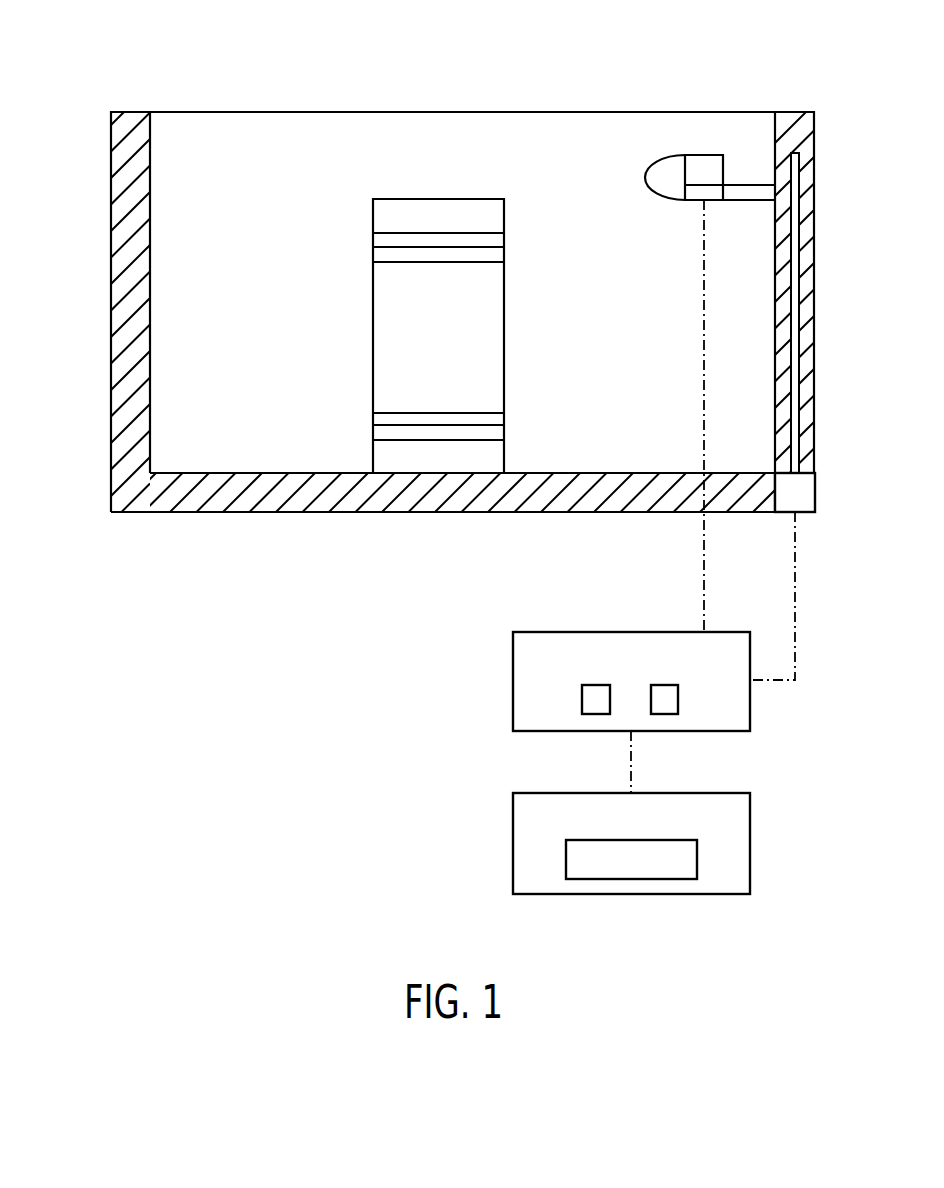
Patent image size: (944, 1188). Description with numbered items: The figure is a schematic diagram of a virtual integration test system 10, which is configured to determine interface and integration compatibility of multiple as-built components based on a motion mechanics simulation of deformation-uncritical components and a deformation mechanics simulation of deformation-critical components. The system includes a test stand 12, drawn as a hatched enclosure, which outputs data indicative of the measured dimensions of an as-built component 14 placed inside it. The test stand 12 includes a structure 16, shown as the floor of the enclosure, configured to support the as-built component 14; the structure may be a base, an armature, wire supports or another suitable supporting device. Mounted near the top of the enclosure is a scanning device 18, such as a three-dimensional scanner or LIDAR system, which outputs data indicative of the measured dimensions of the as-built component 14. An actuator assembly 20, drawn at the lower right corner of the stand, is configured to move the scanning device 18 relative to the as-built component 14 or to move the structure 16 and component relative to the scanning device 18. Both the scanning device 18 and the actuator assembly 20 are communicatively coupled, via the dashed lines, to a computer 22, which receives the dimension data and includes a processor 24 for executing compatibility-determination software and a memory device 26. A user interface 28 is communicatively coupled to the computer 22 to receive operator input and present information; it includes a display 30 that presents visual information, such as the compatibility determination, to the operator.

The virtual integration test system 10 is at (82, 236).
The test stand 12 is at (241, 95).
The as-built component 14 is at (438, 199).
The structure 16 is at (453, 503).
The scanning device 18 is at (705, 165).
The actuator assembly 20 is at (815, 490).
The computer 22 is at (630, 632).
The processor 24 is at (582, 700).
The memory device 26 is at (678, 700).
The user interface 28 is at (597, 793).
The display 30 is at (566, 858).